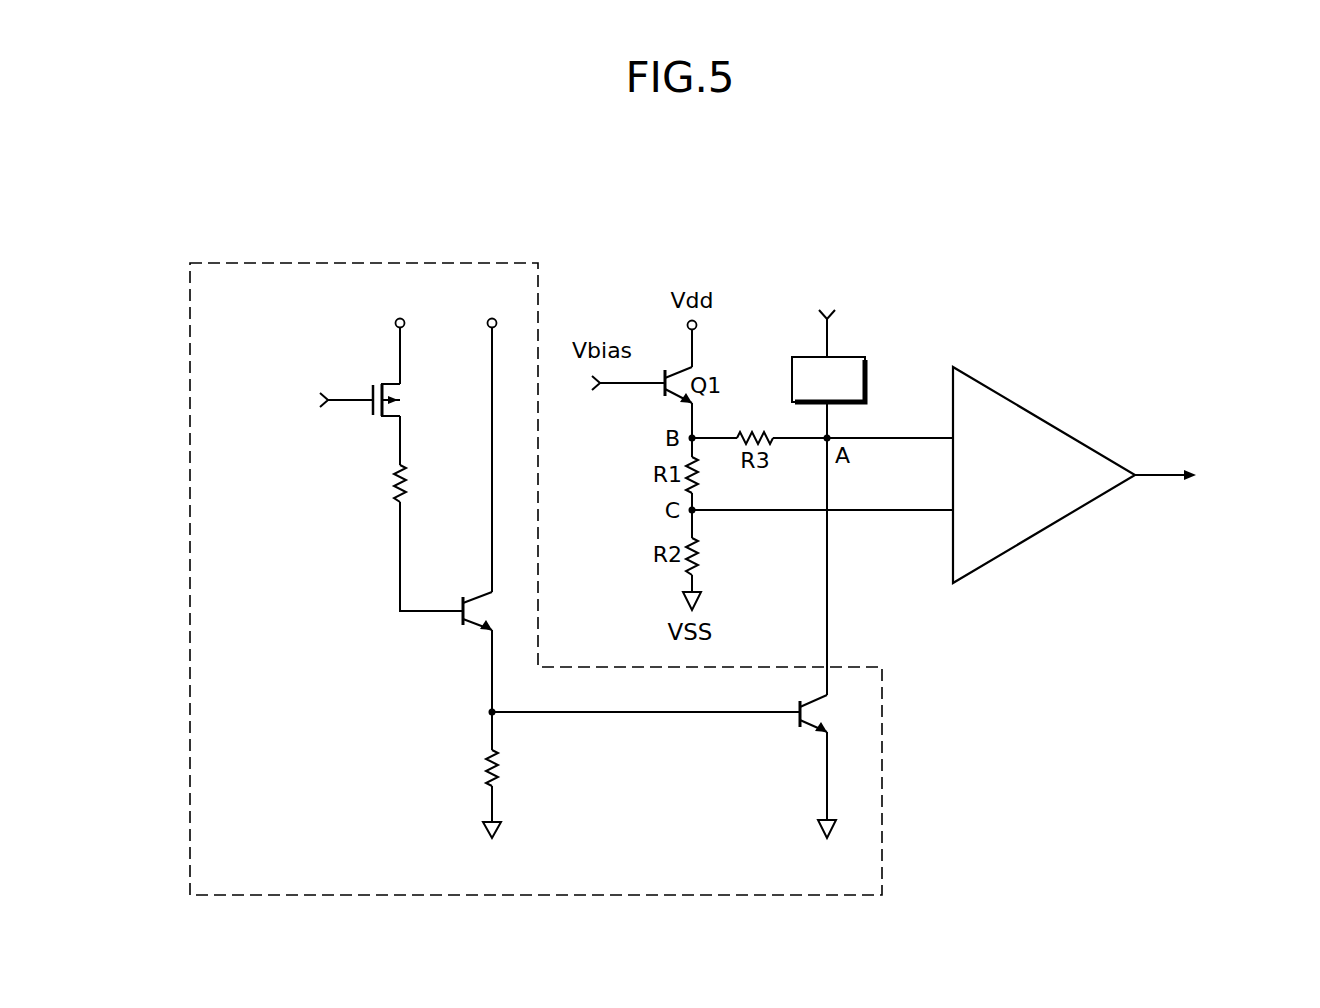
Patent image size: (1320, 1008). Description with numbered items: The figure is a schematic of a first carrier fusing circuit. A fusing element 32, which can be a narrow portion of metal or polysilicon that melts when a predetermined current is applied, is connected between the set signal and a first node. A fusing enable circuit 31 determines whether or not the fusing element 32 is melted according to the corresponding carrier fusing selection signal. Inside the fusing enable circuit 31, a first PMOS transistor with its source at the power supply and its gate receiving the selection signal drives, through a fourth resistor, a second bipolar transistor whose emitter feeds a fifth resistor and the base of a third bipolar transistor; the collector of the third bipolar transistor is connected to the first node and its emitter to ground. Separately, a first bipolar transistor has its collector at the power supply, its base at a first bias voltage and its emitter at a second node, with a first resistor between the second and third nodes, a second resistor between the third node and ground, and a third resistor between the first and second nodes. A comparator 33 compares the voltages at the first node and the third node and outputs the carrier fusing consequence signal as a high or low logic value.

The fusing enable circuit 31 is at (372, 263).
The fusing element 32 is at (868, 379).
The comparator 33 is at (1043, 417).